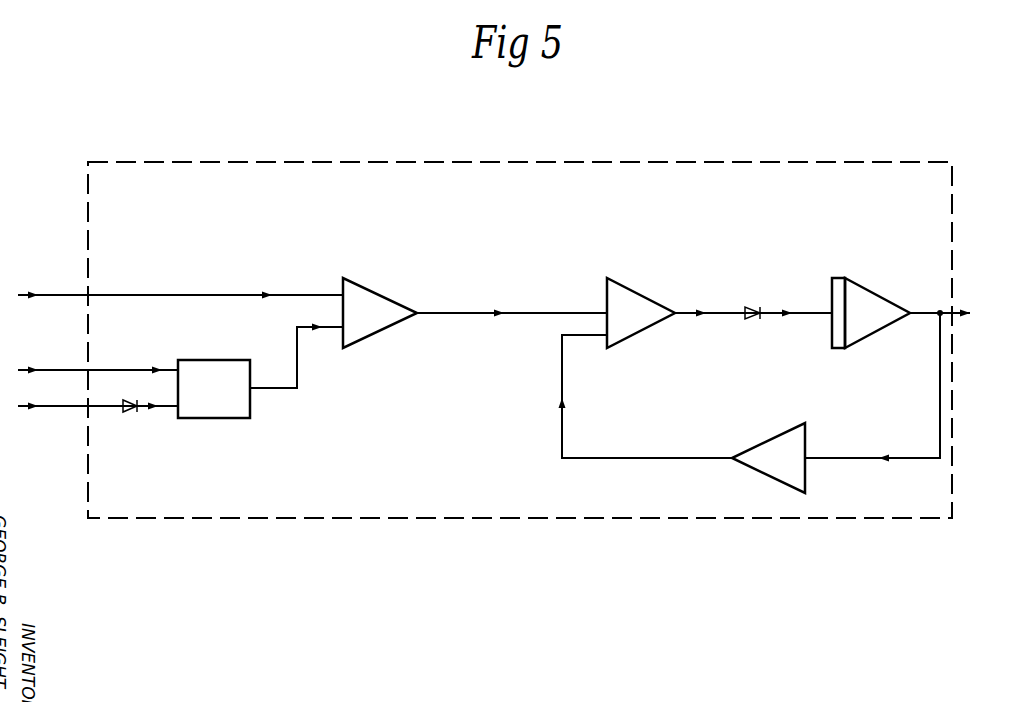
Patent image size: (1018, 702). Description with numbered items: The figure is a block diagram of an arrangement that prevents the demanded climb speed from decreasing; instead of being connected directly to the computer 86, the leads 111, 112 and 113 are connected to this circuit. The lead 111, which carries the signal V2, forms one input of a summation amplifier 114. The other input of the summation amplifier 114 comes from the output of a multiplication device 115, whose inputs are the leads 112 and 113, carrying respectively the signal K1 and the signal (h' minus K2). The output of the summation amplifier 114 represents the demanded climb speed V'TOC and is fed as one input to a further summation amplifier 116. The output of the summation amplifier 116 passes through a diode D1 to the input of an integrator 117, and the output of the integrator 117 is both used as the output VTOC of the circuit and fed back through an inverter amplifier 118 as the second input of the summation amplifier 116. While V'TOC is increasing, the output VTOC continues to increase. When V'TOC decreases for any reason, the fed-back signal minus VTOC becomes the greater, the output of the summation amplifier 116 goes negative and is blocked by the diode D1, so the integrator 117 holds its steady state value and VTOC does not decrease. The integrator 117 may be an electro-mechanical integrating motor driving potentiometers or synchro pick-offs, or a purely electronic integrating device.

The computer 86 is at (725, 198).
The lead 111 is at (223, 293).
The lead 112 is at (118, 368).
The lead 113 is at (102, 405).
The summation amplifier 114 is at (362, 264).
The multiplication device 115 is at (222, 403).
The summation amplifier 116 is at (630, 289).
The integrator 117 is at (868, 289).
The inverter amplifier 118 is at (767, 442).
The diode D1 is at (750, 306).